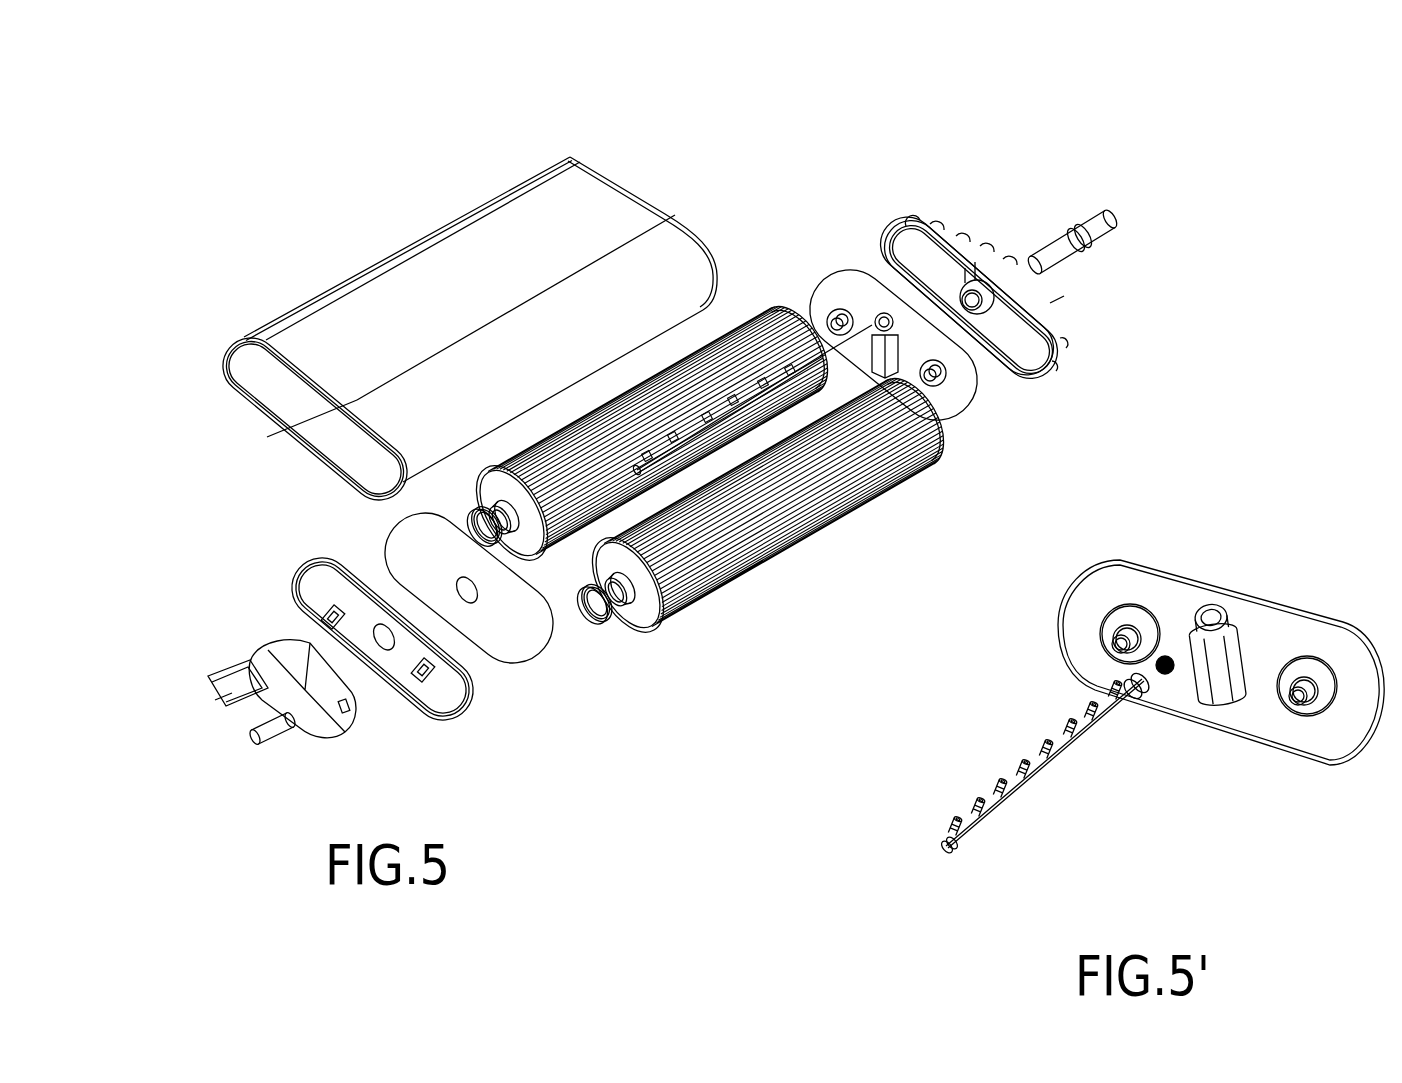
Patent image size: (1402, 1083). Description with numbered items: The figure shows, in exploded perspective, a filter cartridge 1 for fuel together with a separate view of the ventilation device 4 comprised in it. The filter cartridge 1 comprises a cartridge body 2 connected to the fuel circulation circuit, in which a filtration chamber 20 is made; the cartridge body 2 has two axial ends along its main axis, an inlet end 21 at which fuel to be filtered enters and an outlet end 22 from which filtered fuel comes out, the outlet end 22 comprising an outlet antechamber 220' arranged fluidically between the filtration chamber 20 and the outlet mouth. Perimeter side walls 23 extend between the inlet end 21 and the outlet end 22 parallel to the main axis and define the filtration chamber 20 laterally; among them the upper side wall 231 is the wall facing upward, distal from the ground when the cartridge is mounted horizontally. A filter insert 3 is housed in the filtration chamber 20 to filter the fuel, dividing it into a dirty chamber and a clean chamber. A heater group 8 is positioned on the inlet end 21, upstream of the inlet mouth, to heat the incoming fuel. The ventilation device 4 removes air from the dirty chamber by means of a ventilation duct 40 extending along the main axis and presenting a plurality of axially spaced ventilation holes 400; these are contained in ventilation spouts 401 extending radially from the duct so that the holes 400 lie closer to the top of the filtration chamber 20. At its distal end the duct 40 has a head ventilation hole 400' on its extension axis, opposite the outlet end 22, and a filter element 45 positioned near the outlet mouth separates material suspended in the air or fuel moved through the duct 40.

In FIG. 5, the filter cartridge 1 is at (216, 192).
In FIG. 5, the cartridge body 2 is at (418, 176).
In FIG. 5, the filter insert 3 is at (549, 562).
In FIG. 5, the ventilation device 4 is at (861, 275).
In FIG. 5, the heater group 8 is at (362, 742).
In FIG. 5, the filtration chamber 20 is at (272, 388).
In FIG. 5, the inlet end 21 is at (272, 557).
In FIG. 5, the outlet end 22 is at (912, 205).
In FIG. 5, the perimeter side walls 23 is at (368, 262).
In FIG. 5, the ventilation duct 40 is at (826, 338).
In FIG. 5', the ventilation duct 40 is at (1090, 773).
In FIG. 5', the filter element 45 is at (1170, 648).
In FIG. 5, the outlet antechamber 220' is at (999, 204).
In FIG. 5, the upper side wall 231 is at (515, 241).
In FIG. 5', the ventilation holes 400 is at (1001, 758).
In FIG. 5, the head ventilation hole 400' is at (726, 564).
In FIG. 5', the head ventilation hole 400' is at (850, 855).
In FIG. 5', the ventilation spouts 401 is at (960, 828).